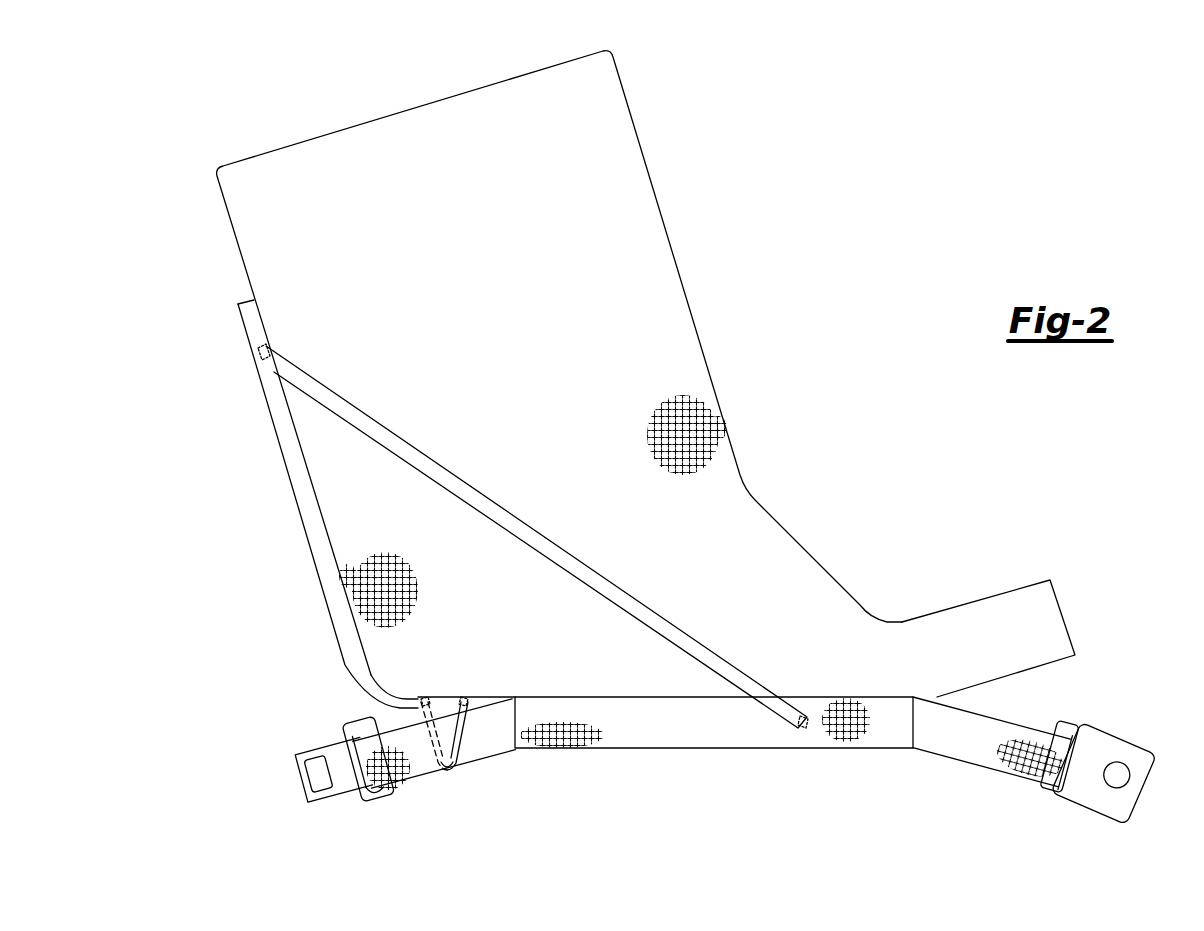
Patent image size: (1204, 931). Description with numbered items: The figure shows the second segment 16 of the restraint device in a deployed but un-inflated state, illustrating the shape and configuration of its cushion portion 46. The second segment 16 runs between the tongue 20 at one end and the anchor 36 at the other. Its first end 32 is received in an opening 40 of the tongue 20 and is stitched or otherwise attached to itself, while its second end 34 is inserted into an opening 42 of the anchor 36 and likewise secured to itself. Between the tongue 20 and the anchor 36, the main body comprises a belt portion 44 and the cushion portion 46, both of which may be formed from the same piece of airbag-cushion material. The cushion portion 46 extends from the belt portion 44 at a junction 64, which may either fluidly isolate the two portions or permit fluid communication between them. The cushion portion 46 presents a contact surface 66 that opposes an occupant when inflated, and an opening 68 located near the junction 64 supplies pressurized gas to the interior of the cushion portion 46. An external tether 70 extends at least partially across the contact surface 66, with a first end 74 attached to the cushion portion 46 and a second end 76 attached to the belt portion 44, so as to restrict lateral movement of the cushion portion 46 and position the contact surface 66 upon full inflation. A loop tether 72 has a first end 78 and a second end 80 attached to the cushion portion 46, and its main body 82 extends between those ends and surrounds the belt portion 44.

The second segment 16 is at (300, 715).
The tongue 20 is at (305, 778).
The first end 32 is at (343, 737).
The second end 34 is at (1065, 733).
The anchor 36 is at (1120, 800).
The opening 40 is at (353, 787).
The opening 42 is at (1045, 785).
The belt portion 44 is at (634, 750).
The cushion portion 46 is at (686, 316).
The junction 64 is at (880, 697).
The contact surface 66 is at (483, 160).
The opening 68 is at (1066, 618).
The external tether 70 is at (562, 558).
The loop tether 72 is at (458, 743).
The first end 74 is at (257, 366).
The second end 76 is at (809, 731).
The first end 78 is at (473, 702).
The second end 80 is at (408, 698).
The main body 82 is at (457, 769).